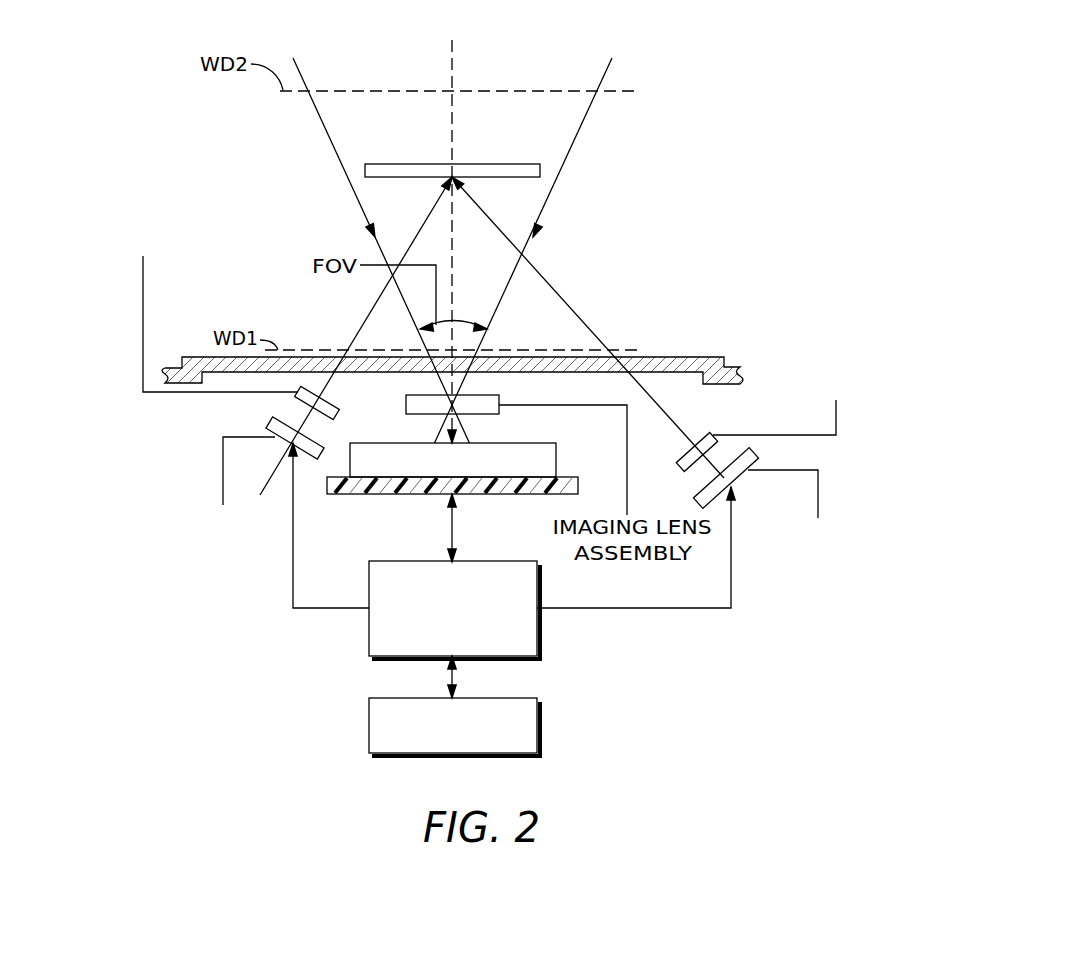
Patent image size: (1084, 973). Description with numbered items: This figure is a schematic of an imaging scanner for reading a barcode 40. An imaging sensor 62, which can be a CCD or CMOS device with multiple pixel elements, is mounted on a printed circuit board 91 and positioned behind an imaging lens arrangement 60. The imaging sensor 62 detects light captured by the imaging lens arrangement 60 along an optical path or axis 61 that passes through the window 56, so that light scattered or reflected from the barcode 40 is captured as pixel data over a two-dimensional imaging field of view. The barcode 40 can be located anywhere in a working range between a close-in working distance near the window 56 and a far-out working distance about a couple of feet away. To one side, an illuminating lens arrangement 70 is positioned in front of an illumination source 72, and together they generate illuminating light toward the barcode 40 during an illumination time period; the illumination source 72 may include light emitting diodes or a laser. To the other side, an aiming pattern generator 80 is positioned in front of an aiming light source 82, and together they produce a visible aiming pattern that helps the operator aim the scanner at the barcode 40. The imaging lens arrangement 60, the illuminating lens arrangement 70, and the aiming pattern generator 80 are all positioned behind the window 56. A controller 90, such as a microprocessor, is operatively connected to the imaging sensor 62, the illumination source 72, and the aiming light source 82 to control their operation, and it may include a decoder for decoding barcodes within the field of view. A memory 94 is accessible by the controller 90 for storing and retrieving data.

The barcode 40 is at (508, 163).
The window 56 is at (197, 357).
The imaging lens arrangement 60 is at (406, 408).
The optical path or axis 61 is at (453, 73).
The imaging sensor 62 is at (542, 443).
The illuminating lens arrangement 70 is at (826, 325).
The illumination source 72 is at (865, 571).
The aiming pattern generator 80 is at (152, 180).
The aiming light source 82 is at (215, 582).
The controller 90 is at (400, 562).
The printed circuit board 91 is at (488, 494).
The memory 94 is at (523, 697).